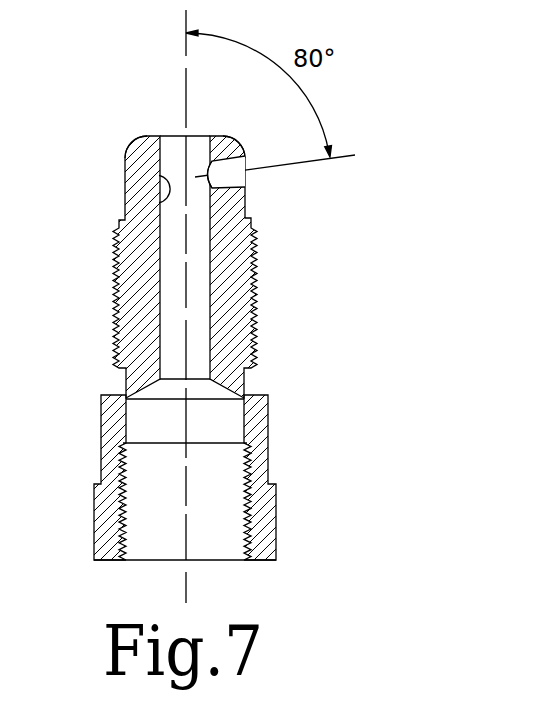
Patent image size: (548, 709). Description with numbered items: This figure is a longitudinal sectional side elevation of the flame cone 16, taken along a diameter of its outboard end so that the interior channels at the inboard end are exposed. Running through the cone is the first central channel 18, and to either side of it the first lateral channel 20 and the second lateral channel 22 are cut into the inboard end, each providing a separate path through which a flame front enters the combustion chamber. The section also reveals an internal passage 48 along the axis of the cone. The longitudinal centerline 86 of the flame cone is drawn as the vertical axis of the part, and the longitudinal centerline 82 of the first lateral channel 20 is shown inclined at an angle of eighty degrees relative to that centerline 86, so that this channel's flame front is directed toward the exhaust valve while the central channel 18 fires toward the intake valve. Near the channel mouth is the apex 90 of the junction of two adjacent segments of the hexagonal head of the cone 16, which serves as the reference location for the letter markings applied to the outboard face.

The flame cone 16 is at (213, 330).
The first central channel 18 is at (172, 281).
The first lateral channel 20 is at (246, 162).
The second lateral channel 22 is at (168, 188).
The central bore 48 is at (197, 305).
The longitudinal centerline of the first lateral channel 82 is at (344, 156).
The longitudinal centerline of the flame cone 86 is at (185, 82).
The apex 90 is at (305, 163).